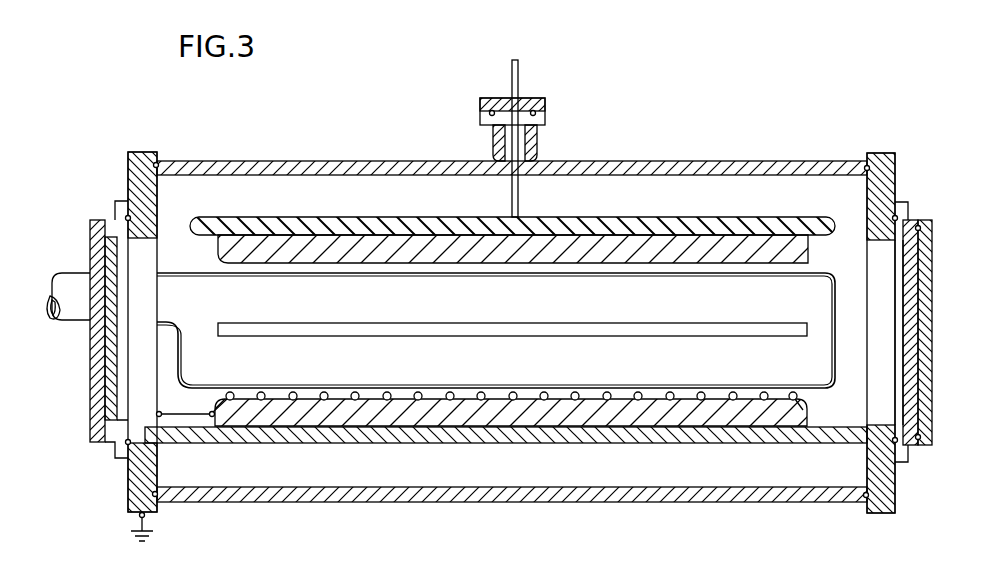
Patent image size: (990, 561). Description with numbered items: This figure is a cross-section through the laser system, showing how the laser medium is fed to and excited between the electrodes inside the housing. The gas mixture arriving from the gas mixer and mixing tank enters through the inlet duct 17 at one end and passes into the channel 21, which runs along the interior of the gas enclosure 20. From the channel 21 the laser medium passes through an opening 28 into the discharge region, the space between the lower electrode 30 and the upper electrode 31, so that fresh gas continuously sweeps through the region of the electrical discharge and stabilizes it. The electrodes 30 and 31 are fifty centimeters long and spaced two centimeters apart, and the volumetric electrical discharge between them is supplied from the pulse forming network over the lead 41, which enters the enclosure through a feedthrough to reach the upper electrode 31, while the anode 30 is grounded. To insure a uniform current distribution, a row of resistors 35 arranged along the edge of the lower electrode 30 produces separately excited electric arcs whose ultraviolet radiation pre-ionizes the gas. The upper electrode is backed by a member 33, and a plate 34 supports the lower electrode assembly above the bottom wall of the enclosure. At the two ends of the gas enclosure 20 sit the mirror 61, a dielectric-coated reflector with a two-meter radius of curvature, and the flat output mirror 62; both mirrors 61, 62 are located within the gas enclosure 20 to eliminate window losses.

The inlet duct 17 is at (72, 280).
The gas enclosure 20 is at (303, 160).
The channel 21 is at (197, 277).
The opening 28 is at (447, 330).
The electrode 30 is at (388, 412).
The electrode 31 is at (580, 247).
The upper electrode cover 33 is at (388, 222).
The bottom plate 34 is at (570, 430).
The row of resistors 35 is at (428, 395).
The lead 41 is at (519, 72).
The mirror 61 is at (103, 383).
The mirror 62 is at (915, 378).